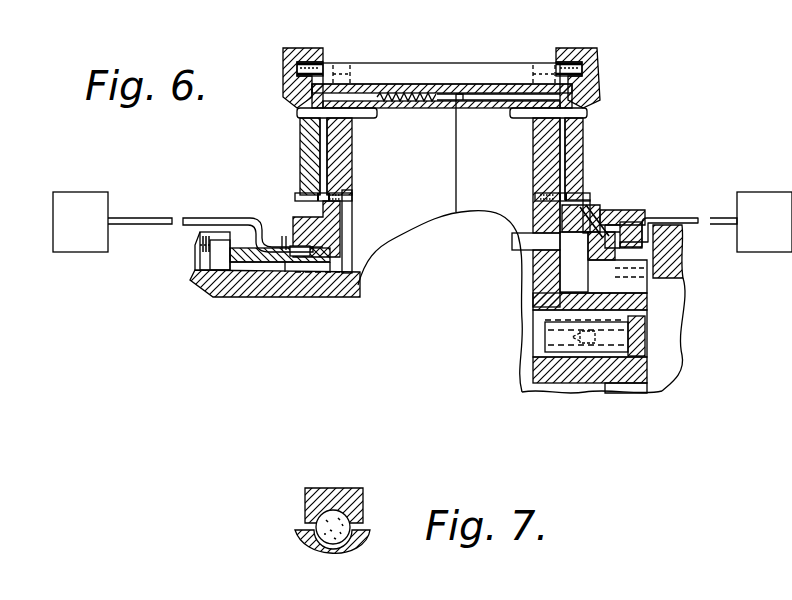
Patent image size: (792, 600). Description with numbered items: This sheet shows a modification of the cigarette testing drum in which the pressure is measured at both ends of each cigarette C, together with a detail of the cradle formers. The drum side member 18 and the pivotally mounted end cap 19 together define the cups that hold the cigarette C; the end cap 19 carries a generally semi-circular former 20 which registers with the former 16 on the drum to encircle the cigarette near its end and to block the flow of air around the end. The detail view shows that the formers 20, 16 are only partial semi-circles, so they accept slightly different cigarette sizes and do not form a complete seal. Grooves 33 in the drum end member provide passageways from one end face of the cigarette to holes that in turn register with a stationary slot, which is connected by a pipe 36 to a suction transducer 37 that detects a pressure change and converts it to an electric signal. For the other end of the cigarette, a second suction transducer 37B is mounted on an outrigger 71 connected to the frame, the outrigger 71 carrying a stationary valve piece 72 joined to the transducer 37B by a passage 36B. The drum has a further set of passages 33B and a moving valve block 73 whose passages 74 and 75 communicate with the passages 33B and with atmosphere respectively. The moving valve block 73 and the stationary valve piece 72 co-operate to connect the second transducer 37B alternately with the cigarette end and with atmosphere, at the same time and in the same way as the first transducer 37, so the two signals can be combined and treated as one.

In FIG. 6, the cigarette C is at (430, 72).
In FIG. 6, the end cap 19 is at (314, 60).
In FIG. 6, the side member 18 is at (585, 142).
In FIG. 6, the groove 33 is at (300, 171).
In FIG. 6, the passage 33B is at (565, 158).
In FIG. 6, the pipe 36 is at (199, 217).
In FIG. 6, the passage 36B is at (674, 218).
In FIG. 6, the suction transducer 37 is at (95, 237).
In FIG. 6, the second suction transducer 37B is at (788, 237).
In FIG. 6, the outrigger 71 is at (682, 250).
In FIG. 6, the stationary valve piece 72 is at (647, 287).
In FIG. 6, the moving valve block 73 is at (602, 216).
In FIG. 6, the passage 74 is at (588, 210).
In FIG. 6, the passage 75 is at (630, 222).
In FIG. 7, the semi-circular former 20 is at (310, 490).
In FIG. 7, the semi-circular former 16 is at (305, 534).